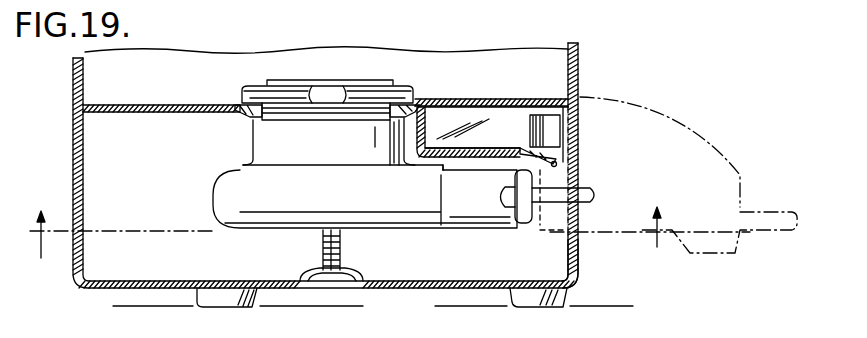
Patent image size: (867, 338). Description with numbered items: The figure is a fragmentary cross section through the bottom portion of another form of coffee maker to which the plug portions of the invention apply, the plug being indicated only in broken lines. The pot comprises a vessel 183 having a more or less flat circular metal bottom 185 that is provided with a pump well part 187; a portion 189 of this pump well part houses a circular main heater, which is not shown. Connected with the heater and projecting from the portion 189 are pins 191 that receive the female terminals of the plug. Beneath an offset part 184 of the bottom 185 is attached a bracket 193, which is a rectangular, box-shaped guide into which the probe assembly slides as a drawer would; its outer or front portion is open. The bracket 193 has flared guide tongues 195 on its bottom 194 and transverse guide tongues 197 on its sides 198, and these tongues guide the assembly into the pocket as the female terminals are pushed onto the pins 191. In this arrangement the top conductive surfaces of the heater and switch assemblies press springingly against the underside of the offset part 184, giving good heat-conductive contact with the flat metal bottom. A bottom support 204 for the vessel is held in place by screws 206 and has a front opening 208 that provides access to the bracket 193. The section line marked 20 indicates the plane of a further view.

The vessel 183 is at (572, 62).
The offset part of the bottom 184 is at (485, 99).
The circular metal bottom 185 is at (135, 113).
The pump well part 187 is at (338, 157).
The heater-containing portion 189 is at (340, 202).
The pins 191 is at (597, 196).
The bracket 193 is at (484, 164).
The bottom of the bracket 194 is at (502, 150).
The flared guide tongues 195 is at (553, 160).
The transverse guide tongues 197 is at (551, 133).
The sides of the bracket 198 is at (457, 90).
The bottom support 204 is at (578, 265).
The screws 206 is at (340, 242).
The front opening 208 is at (585, 168).
The section line 20- 20 is at (380, 226).